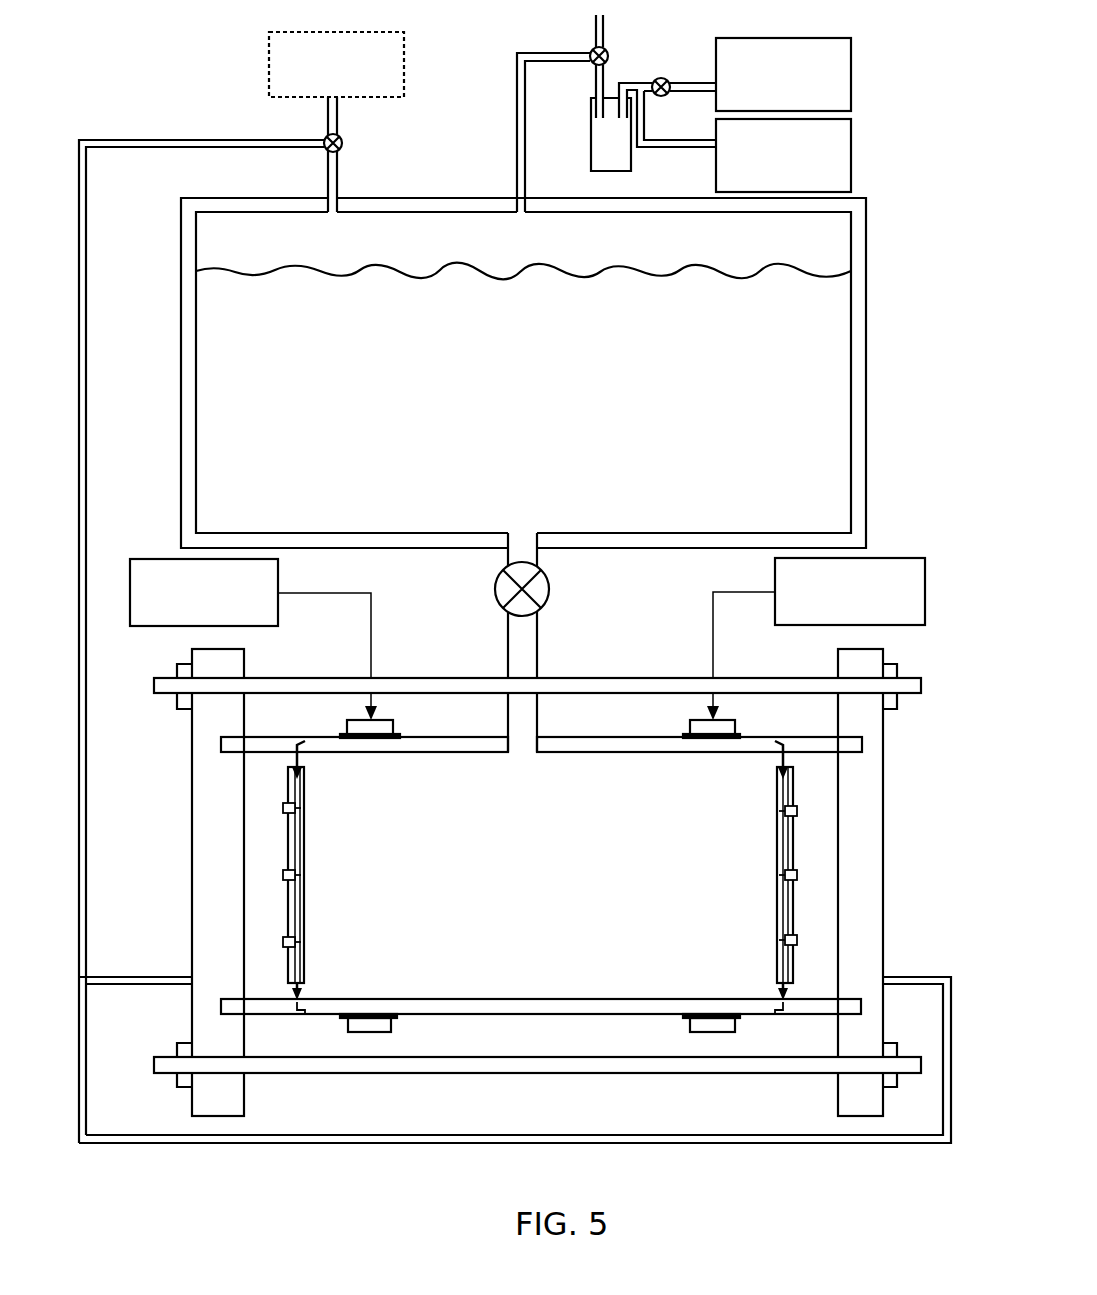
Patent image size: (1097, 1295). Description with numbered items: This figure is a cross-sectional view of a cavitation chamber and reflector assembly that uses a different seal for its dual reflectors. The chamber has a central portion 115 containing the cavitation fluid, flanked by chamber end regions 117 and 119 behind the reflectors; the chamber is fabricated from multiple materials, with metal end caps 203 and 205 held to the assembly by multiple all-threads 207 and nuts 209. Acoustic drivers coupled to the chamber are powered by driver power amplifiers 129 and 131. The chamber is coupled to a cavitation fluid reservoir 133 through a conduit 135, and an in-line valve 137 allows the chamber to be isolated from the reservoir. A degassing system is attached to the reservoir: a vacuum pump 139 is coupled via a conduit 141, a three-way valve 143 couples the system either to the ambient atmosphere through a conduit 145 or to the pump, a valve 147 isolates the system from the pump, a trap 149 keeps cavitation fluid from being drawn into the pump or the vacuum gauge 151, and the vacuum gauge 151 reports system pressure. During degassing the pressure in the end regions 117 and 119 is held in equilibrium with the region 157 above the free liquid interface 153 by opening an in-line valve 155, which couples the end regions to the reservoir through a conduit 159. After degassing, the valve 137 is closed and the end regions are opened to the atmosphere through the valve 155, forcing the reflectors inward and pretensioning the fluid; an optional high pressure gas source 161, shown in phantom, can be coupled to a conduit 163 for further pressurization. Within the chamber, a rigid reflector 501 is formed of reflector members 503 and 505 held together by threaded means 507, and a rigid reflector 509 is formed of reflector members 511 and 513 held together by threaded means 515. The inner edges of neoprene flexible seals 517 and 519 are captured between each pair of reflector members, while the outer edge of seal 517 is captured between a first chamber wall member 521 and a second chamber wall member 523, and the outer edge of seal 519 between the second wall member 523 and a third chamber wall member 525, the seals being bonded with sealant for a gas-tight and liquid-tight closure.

The central portion 115 is at (559, 898).
The chamber end region 117 is at (258, 850).
The chamber end region 119 is at (832, 831).
The driver power amplifier 129 is at (130, 590).
The driver power amplifier 131 is at (910, 558).
The cavitation fluid reservoir 133 is at (866, 373).
The conduit 135 is at (522, 628).
The in-line valve 137 is at (495, 591).
The vacuum pump 139 is at (851, 72).
The conduit 141 is at (517, 153).
The three-way valve 143 is at (610, 57).
The conduit 145 is at (596, 32).
The valve 147 is at (661, 78).
The trap 149 is at (591, 130).
The vacuum gauge 151 is at (851, 153).
The free liquid interface 153 is at (632, 265).
The in-line valve 155 is at (342, 143).
The region above free liquid interface 157 is at (528, 257).
The conduit 159 is at (170, 140).
The high pressure gas source 161 is at (269, 66).
The conduit 163 is at (337, 107).
The end cap 203 is at (218, 817).
The end cap 205 is at (862, 817).
The all-thread 207 is at (567, 683).
The nut 209 is at (177, 710).
The rigid reflector 501 is at (333, 877).
The reflector member 503 is at (335, 910).
The reflector member 505 is at (290, 893).
The threaded means 507 is at (283, 808).
The rigid reflector 509 is at (748, 877).
The reflector member 511 is at (783, 832).
The reflector member 513 is at (790, 838).
The threaded means 515 is at (815, 805).
The neoprene flexible seal 517 is at (305, 992).
The neoprene flexible seal 519 is at (772, 993).
The first chamber wall member 521 is at (270, 745).
The second chamber wall member 523 is at (448, 752).
The third chamber wall member 525 is at (812, 745).